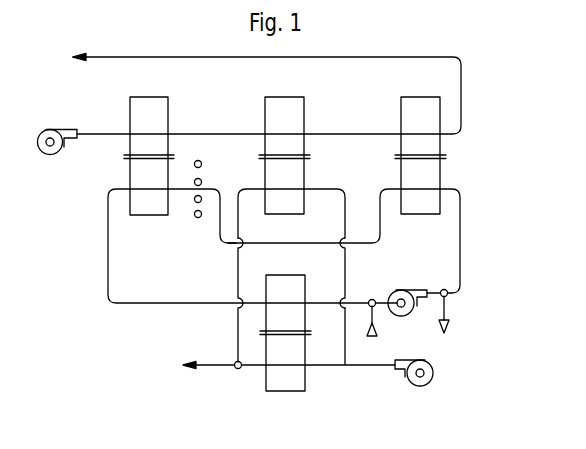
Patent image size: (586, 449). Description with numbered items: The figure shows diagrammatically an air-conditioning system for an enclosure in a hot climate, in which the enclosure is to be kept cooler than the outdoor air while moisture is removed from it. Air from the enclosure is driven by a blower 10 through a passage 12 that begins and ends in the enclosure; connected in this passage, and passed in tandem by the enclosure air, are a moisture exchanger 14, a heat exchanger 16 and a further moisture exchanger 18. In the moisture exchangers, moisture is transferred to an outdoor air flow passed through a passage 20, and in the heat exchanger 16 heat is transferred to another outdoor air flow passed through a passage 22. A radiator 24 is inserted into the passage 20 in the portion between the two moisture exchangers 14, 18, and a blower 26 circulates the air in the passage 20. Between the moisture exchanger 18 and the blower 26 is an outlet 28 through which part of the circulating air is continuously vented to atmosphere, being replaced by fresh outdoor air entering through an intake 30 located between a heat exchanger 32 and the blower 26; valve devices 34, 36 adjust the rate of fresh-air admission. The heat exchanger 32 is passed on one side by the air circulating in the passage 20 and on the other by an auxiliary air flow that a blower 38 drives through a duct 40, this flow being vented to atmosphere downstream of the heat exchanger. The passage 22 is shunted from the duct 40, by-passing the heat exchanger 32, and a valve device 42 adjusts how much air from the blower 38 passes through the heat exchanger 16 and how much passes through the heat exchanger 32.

The blower 10 is at (47, 158).
The passage 12 is at (386, 57).
The moisture exchanger 14 is at (139, 103).
The heat exchanger 16 is at (295, 103).
The further moisture exchanger 18 is at (433, 104).
The passage 20 is at (165, 307).
The passage 22 is at (347, 266).
The radiator 24 is at (195, 218).
The blower 26 is at (404, 316).
The outlet 28 is at (447, 312).
The intake 30 is at (368, 323).
The heat exchanger 32 is at (275, 285).
The valve device 34 is at (449, 291).
The valve device 36 is at (375, 300).
The blower 38 is at (434, 380).
The duct 40 is at (343, 371).
The valve device 42 is at (235, 370).